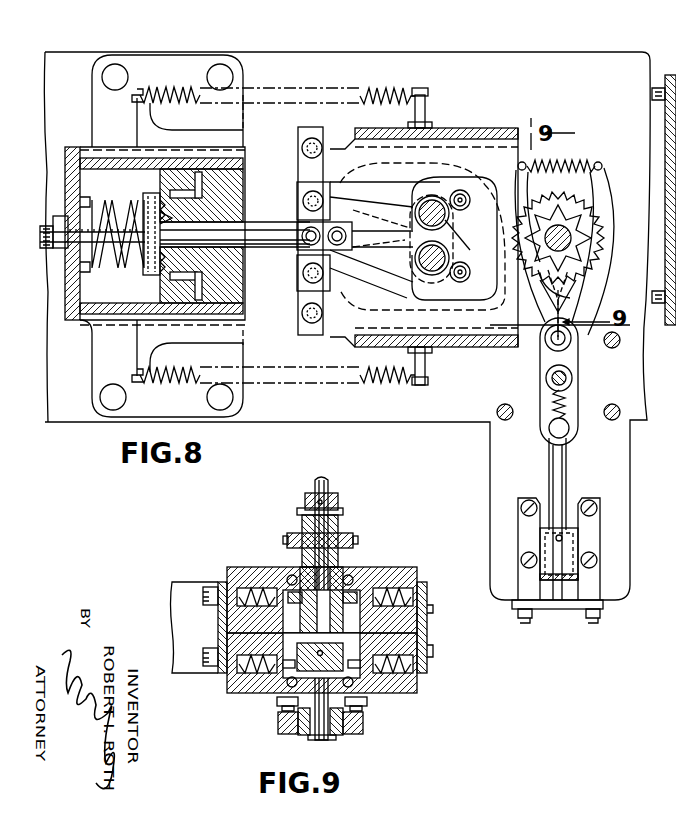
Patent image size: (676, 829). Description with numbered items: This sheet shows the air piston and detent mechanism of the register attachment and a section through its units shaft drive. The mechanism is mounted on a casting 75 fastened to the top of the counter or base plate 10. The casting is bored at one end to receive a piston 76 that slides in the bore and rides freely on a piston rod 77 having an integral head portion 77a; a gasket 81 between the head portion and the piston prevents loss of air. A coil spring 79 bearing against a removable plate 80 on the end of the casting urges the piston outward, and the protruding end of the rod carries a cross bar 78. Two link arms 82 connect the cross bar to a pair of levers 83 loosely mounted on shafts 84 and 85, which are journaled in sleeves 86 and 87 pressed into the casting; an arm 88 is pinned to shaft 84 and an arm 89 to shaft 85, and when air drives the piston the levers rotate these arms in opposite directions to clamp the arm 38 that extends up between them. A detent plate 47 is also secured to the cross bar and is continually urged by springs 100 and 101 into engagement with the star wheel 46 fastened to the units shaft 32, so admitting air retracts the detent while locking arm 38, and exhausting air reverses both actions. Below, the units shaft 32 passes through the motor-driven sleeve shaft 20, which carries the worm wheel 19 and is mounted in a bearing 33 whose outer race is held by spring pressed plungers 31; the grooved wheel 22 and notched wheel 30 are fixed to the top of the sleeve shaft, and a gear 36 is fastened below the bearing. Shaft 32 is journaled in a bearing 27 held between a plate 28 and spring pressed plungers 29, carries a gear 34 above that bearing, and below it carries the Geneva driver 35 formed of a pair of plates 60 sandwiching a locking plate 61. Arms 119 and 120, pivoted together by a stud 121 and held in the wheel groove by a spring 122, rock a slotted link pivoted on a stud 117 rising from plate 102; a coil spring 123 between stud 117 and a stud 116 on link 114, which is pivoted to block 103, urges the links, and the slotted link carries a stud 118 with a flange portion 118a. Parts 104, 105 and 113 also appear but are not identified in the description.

In FIG. 8, the base plate 10 is at (432, 421).
In FIG. 8, the casting 75 is at (102, 368).
In FIG. 8, the removable plate 80 is at (70, 165).
In FIG. 8, the piston 76 is at (160, 180).
In FIG. 8, the coil spring 79 is at (128, 266).
In FIG. 8, the head portion 77a is at (162, 235).
In FIG. 8, the piston rod 77 is at (276, 248).
In FIG. 8, the gasket 81 is at (170, 217).
In FIG. 8, the spring 100 is at (165, 80).
In FIG. 8, the spring 101 is at (170, 383).
In FIG. 8, the cross bar 78 is at (297, 210).
In FIG. 8, the arm 38 is at (352, 246).
In FIG. 8, the detent plate 47 is at (512, 135).
In FIG. 8, the link arms 82 is at (349, 190).
In FIG. 8, the arm 88 is at (372, 213).
In FIG. 8, the arm 89 is at (395, 270).
In FIG. 8, the sleeve 86 is at (433, 205).
In FIG. 8, the shaft 84 is at (449, 216).
In FIG. 8, the sleeve 87 is at (422, 268).
In FIG. 8, the shaft 85 is at (440, 286).
In FIG. 8, the arm 120 is at (490, 210).
In FIG. 8, the levers 83 is at (423, 197).
In FIG. 8, the notched wheel 30 is at (600, 228).
In FIG. 9, the notched wheel 30 is at (345, 535).
In FIG. 8, the star wheel 46 is at (577, 217).
In FIG. 9, the star wheel 46 is at (340, 510).
In FIG. 8, the units shaft 32 is at (571, 242).
In FIG. 9, the units shaft 32 is at (325, 484).
In FIG. 8, the spring 122 is at (566, 160).
In FIG. 8, the arm 119 is at (604, 176).
In FIG. 8, the stud 118 is at (578, 300).
In FIG. 8, the flange portion 118a is at (574, 293).
In FIG. 8, the pivot stud 117 is at (572, 379).
In FIG. 8, the stud 121 is at (570, 348).
In FIG. 8, the coil spring 123 is at (565, 405).
In FIG. 8, the stud 116 is at (572, 430).
In FIG. 8, the plate 102 is at (618, 590).
In FIG. 8, the link 114 is at (560, 472).
In FIG. 8, the bracket 105 is at (530, 523).
In FIG. 8, the bracket 104 is at (595, 526).
In FIG. 8, the block 103 is at (557, 568).
In FIG. 8, the base 113 is at (563, 606).
In FIG. 9, the grooved wheel 22 is at (340, 555).
In FIG. 9, the sleeve shaft 20 is at (305, 607).
In FIG. 9, the bearing 33 is at (290, 575).
In FIG. 9, the spring pressed plungers 31 is at (250, 573).
In FIG. 9, the worm wheel 19 is at (292, 630).
In FIG. 9, the gear 36 is at (368, 650).
In FIG. 9, the gear 34 is at (358, 658).
In FIG. 9, the spring pressed plungers 29 is at (278, 693).
In FIG. 9, the plate 28 is at (282, 700).
In FIG. 9, the bearing 27 is at (362, 700).
In FIG. 9, the plates 60 is at (280, 728).
In FIG. 9, the locking plate 61 is at (300, 736).
In FIG. 9, the Geneva driver 35 is at (345, 735).